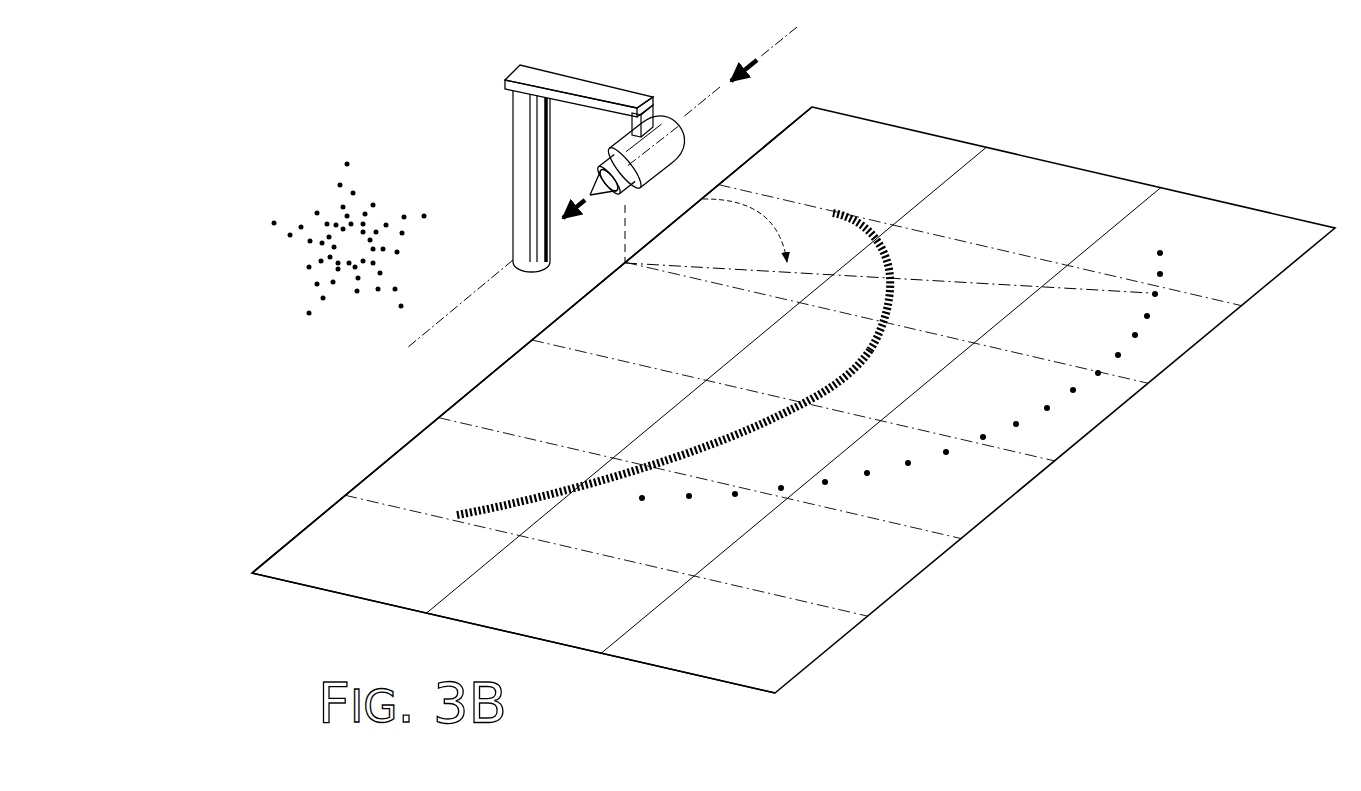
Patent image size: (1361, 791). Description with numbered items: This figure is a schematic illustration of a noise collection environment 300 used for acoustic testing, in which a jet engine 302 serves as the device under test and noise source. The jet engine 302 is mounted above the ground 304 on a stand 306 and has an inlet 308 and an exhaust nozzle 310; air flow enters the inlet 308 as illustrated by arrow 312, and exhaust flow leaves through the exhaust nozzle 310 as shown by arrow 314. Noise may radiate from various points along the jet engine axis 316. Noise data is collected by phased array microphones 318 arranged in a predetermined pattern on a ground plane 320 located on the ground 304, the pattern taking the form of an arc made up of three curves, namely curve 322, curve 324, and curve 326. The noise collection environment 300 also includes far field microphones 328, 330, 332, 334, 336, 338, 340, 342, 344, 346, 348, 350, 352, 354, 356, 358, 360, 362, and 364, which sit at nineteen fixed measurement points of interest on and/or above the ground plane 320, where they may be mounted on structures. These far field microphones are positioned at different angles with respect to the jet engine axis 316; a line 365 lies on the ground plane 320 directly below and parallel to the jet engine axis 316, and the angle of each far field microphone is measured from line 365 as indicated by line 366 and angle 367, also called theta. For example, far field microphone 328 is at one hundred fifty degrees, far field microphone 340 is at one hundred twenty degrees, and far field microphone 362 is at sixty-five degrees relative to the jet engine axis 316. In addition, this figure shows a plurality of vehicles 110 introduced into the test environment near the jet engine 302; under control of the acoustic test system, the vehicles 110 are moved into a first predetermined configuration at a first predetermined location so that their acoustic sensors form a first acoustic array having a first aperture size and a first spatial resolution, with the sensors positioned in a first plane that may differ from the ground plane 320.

The vehicles 110 is at (332, 235).
The noise collection environment 300 is at (1131, 610).
The jet engine 302 is at (655, 112).
The ground 304 is at (484, 367).
The stand 306 is at (585, 82).
The inlet 308 is at (686, 140).
The exhaust nozzle 310 is at (598, 185).
The arrow 312 is at (742, 64).
The arrow 314 is at (578, 212).
The jet engine axis 316 is at (481, 284).
The phased array microphones 318 is at (709, 364).
The ground plane 320 is at (1073, 168).
The curve 322 is at (850, 374).
The curve 324 is at (740, 437).
The curve 326 is at (882, 343).
The far field microphone 328 is at (636, 499).
The far field microphone 330 is at (689, 502).
The far field microphone 332 is at (743, 494).
The far field microphone 334 is at (788, 492).
The far field microphone 336 is at (826, 478).
The far field microphone 338 is at (867, 478).
The far field microphone 340 is at (910, 458).
The far field microphone 342 is at (948, 457).
The far field microphone 344 is at (981, 432).
The far field microphone 346 is at (1022, 428).
The far field microphone 348 is at (1044, 403).
The far field microphone 350 is at (1078, 395).
The far field microphone 352 is at (1094, 372).
The far field microphone 354 is at (1122, 360).
The far field microphone 356 is at (1131, 333).
The far field microphone 358 is at (1160, 298).
The far field microphone 360 is at (1152, 318).
The far field microphone 362 is at (1155, 274).
The far field microphone 364 is at (1162, 248).
The line 365 is at (390, 455).
The line 366 is at (973, 285).
The angle 367 is at (736, 207).